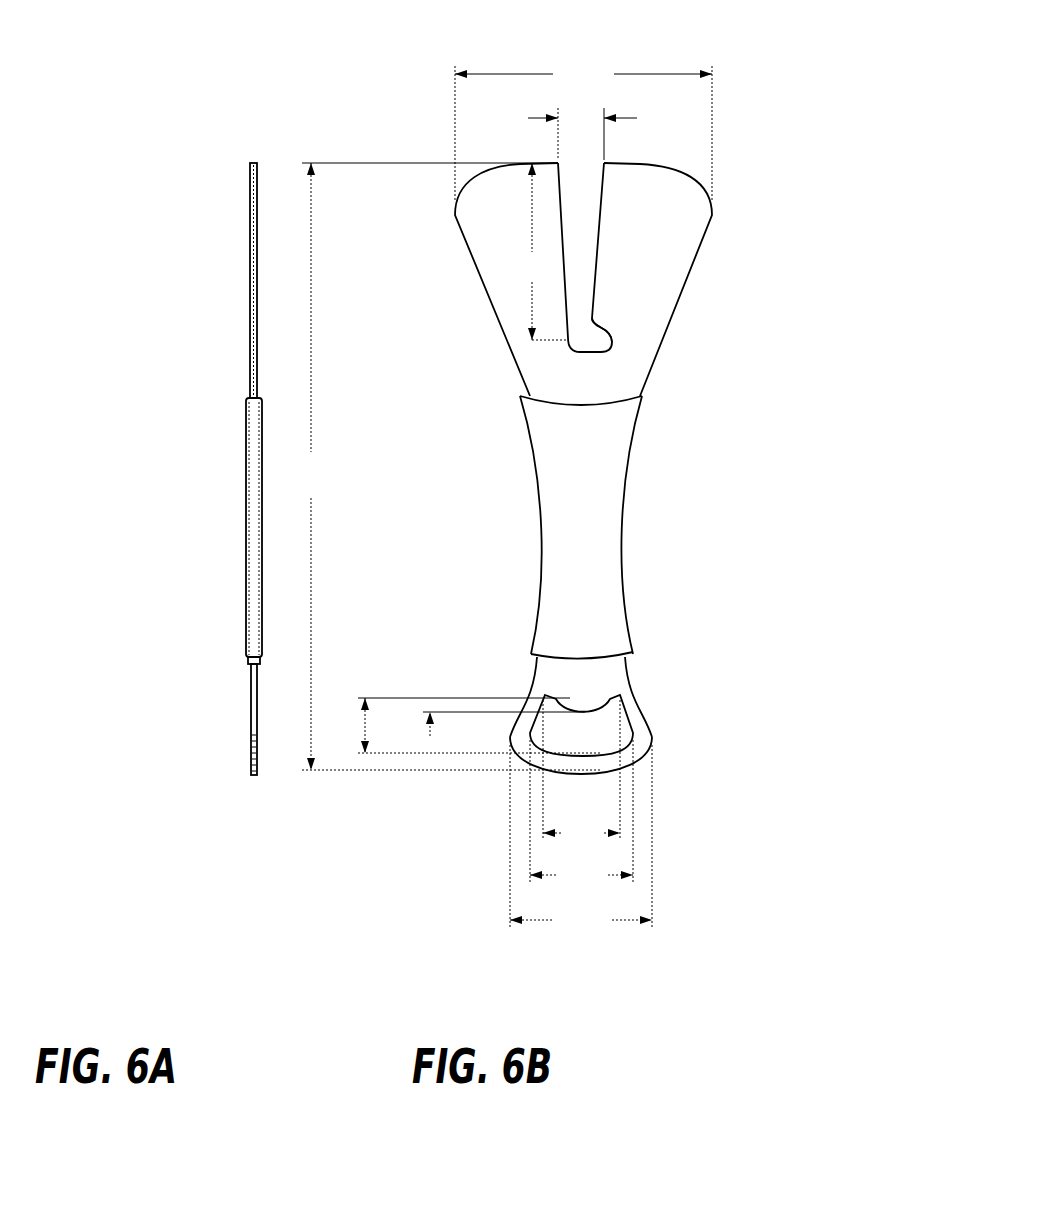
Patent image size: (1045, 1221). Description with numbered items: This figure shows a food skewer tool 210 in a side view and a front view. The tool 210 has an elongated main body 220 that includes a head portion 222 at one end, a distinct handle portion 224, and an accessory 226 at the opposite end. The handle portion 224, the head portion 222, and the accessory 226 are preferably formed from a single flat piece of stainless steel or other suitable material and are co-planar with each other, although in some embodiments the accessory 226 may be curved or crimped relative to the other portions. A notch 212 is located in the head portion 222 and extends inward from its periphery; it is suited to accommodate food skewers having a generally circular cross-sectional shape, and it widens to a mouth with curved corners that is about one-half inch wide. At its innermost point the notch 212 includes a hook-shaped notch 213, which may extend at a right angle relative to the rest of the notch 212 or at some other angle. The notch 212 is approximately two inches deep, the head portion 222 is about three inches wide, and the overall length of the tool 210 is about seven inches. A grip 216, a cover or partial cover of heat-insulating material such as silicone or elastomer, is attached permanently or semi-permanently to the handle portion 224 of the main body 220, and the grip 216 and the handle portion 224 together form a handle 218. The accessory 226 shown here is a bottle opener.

In FIG. 6A, the food skewer tool 210 is at (157, 48).
In FIG. 6B, the food skewer tool 210 is at (457, 48).
In FIG. 6B, the notch 212 is at (581, 164).
In FIG. 6B, the hook-shaped notch 213 is at (603, 330).
In FIG. 6A, the grip 216 is at (246, 522).
In FIG. 6B, the grip 216 is at (565, 526).
In FIG. 6A, the handle 218 is at (298, 580).
In FIG. 6B, the handle 218 is at (710, 580).
In FIG. 6A, the elongated main body 220 is at (296, 378).
In FIG. 6B, the elongated main body 220 is at (710, 379).
In FIG. 6A, the head portion 222 is at (250, 243).
In FIG. 6B, the head portion 222 is at (477, 242).
In FIG. 6A, the handle portion 224 is at (250, 663).
In FIG. 6B, the handle portion 224 is at (545, 664).
In FIG. 6B, the accessory 226 is at (630, 713).